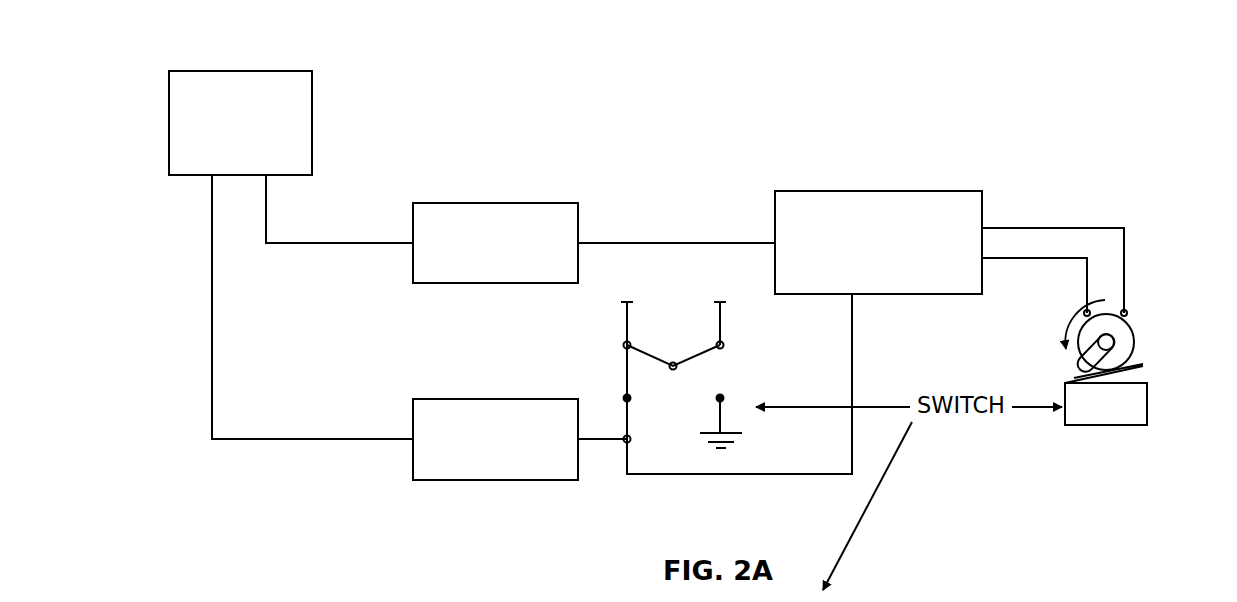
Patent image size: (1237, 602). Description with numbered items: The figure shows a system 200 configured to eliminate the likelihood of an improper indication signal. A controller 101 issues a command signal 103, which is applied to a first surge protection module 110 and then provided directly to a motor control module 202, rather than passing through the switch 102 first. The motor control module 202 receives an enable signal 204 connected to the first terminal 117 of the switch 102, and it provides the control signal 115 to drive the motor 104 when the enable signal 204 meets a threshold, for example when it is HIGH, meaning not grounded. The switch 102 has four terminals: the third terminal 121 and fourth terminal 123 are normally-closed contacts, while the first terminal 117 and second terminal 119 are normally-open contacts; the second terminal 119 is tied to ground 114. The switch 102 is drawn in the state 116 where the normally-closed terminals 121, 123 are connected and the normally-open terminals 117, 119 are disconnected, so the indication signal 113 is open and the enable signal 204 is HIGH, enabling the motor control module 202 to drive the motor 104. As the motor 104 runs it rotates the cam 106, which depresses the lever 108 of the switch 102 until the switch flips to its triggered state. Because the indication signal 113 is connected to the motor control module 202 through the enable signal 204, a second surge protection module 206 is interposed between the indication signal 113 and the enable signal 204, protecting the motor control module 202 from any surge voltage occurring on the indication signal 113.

The system 200 is at (455, 78).
The controller 101 is at (218, 149).
The command signal 103 is at (350, 244).
The surge protection module 110 is at (495, 203).
The motor control module 202 is at (878, 191).
The enable signal 204 is at (752, 474).
The surge protection module 206 is at (495, 399).
The indication signal 113 is at (241, 439).
The state 116 is at (660, 428).
The third terminal 121 is at (631, 340).
The fourth terminal 123 is at (717, 338).
The first terminal 117 is at (627, 388).
The second terminal 119 is at (720, 388).
The ground 114 is at (742, 434).
The control signal 115 is at (1025, 225).
The motor 104 is at (1138, 323).
The cam 106 is at (1073, 361).
The lever 108 is at (1151, 374).
The switch 102 is at (1106, 425).